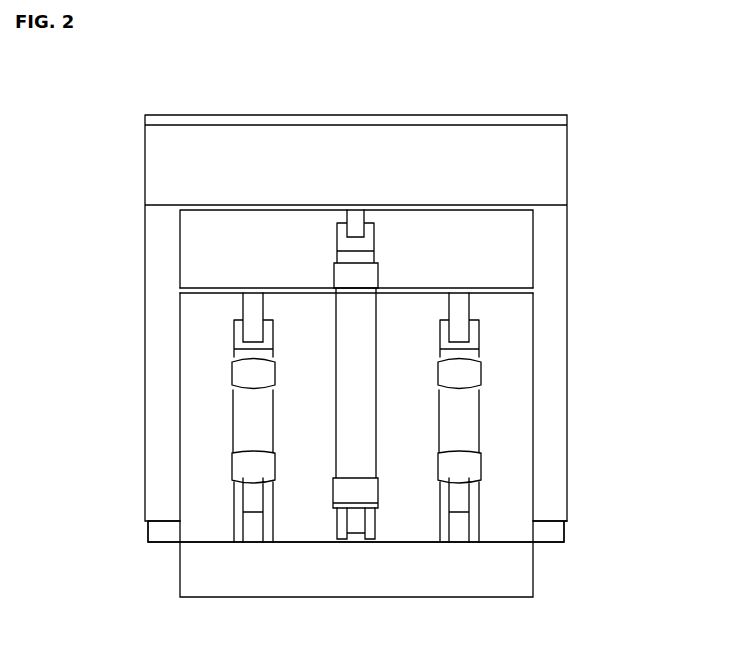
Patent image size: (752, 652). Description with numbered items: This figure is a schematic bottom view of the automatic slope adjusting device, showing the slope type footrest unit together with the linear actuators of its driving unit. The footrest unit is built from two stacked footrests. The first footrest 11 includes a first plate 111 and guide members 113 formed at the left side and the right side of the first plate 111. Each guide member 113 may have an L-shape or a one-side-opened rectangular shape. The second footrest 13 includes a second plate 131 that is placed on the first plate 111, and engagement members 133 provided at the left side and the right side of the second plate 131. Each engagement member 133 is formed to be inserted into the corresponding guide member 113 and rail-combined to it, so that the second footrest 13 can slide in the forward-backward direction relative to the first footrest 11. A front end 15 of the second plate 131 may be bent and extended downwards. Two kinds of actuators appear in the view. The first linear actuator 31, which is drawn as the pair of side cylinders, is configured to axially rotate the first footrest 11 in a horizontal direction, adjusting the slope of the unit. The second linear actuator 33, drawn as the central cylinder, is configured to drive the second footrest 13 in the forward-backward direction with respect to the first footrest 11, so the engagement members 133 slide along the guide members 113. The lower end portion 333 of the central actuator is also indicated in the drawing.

The front end 15 is at (592, 110).
The second footrest 13 is at (277, 259).
The second plate 131 is at (210, 238).
The engagement member 133 is at (160, 297).
The first footrest 11 is at (424, 445).
The first plate 111 is at (512, 470).
The guide member 113 is at (398, 529).
The first linear actuator 31 is at (243, 420).
The second linear actuator 33 is at (363, 333).
The lower end portion of central actuator 333 is at (395, 524).